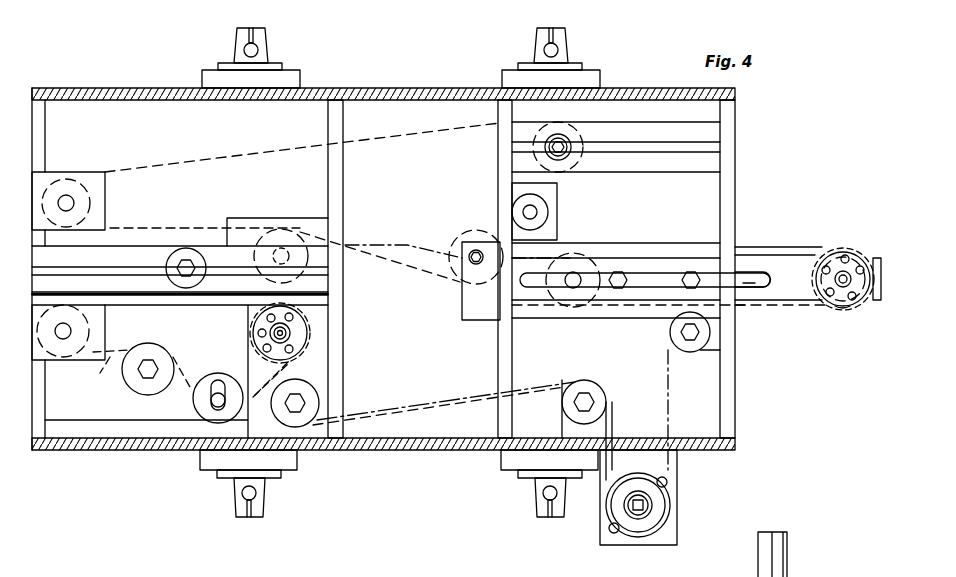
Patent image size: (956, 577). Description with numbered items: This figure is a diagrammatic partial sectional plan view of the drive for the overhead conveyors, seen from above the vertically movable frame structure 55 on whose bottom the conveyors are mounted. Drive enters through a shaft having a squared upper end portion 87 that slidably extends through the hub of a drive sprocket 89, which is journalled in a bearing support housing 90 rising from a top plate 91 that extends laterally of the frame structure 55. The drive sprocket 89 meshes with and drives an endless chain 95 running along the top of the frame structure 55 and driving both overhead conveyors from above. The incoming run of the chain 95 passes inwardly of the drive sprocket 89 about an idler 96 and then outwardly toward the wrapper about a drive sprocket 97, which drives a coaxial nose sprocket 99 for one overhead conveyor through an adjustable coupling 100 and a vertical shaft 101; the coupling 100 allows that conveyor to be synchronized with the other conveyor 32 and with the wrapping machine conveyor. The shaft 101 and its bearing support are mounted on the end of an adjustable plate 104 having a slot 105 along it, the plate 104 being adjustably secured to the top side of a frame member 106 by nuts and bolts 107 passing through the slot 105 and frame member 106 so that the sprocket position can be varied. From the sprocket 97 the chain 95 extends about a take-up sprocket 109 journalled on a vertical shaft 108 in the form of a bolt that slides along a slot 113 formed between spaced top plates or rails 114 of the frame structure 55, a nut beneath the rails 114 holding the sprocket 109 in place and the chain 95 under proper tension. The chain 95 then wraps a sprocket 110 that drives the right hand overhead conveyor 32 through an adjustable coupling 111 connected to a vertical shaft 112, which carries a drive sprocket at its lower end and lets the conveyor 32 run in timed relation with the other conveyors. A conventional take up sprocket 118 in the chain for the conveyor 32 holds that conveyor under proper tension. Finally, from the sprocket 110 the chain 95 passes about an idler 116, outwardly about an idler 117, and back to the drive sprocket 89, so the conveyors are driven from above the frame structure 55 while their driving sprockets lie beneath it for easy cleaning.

The overhead conveyor 32 is at (120, 367).
The frame structure 55 is at (386, 453).
The squared upper end portion 87 is at (640, 512).
The drive sprocket 89 is at (632, 475).
The bearing support housing 90 is at (608, 540).
The top plate 91 is at (670, 530).
The endless chain 95 is at (400, 240).
The idler 96 is at (688, 352).
The drive sprocket 97 is at (850, 310).
The nose sprocket 99 is at (825, 258).
The adjustable coupling 100 is at (858, 255).
The vertical shaft 101 is at (843, 274).
The adjustable plate 104 is at (782, 257).
The slot 105 is at (750, 285).
The frame member 106 is at (630, 250).
The nuts and bolts 107 is at (615, 272).
The vertical shaft 108 is at (186, 260).
The take-up sprocket 109 is at (212, 258).
The sprocket 110 is at (308, 352).
The adjustable coupling 111 is at (300, 338).
The vertical shaft 112 is at (290, 325).
The slot 113 is at (128, 268).
The top plates or rails 114 is at (113, 247).
The idler 116 is at (318, 400).
The idler 117 is at (564, 403).
The take up sprocket 118 is at (218, 374).